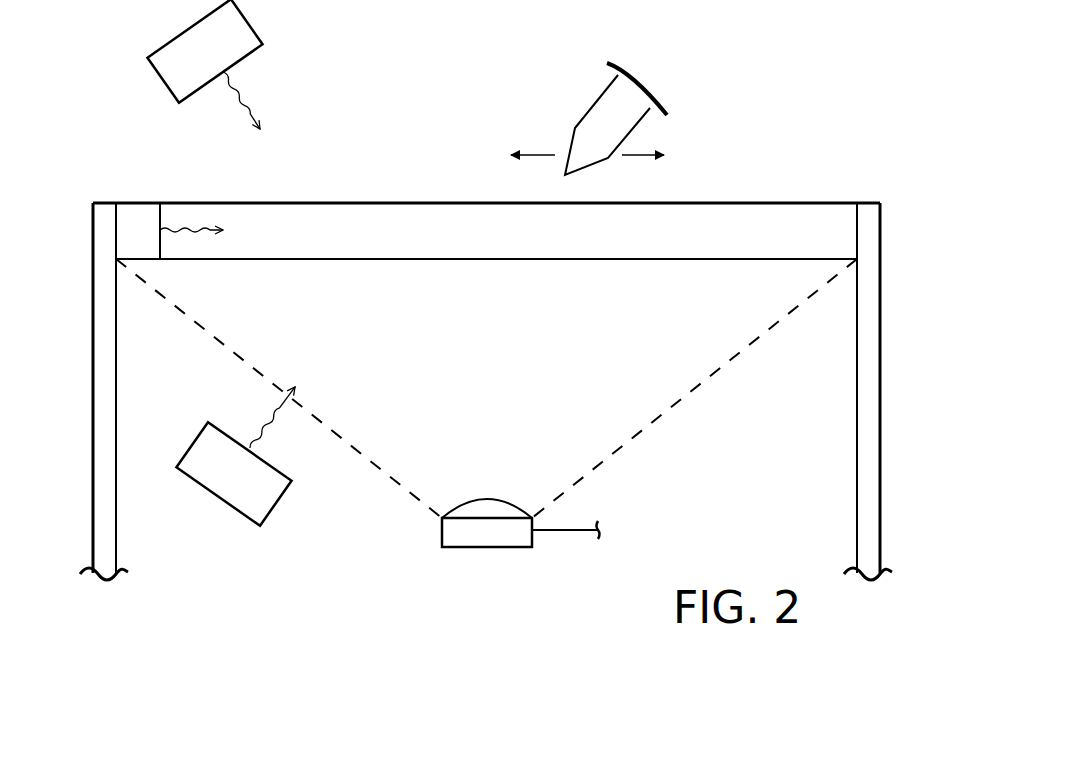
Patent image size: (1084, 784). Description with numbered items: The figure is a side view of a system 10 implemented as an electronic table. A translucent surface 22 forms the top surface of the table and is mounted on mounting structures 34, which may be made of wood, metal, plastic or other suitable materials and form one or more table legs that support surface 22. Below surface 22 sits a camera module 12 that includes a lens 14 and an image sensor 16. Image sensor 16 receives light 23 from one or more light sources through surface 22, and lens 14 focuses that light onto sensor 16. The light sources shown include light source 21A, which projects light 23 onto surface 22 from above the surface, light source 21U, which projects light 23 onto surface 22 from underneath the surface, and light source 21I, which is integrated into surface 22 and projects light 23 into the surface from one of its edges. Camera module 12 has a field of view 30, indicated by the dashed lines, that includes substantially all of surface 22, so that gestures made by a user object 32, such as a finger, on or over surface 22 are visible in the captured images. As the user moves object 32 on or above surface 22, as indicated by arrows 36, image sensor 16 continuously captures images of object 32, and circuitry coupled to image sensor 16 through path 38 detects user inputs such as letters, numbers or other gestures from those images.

The system 10 is at (787, 78).
The camera module 12 is at (439, 532).
The lens 14 is at (488, 507).
The image sensor 16 is at (487, 538).
The light source 21A is at (245, 23).
The light source 21I is at (138, 212).
The light source 21U is at (220, 497).
The translucent surface 22 is at (750, 210).
The light 23 is at (243, 102).
The field of view 30 is at (500, 375).
The user object 32 is at (602, 113).
The mounting structures 34 is at (105, 440).
The arrows 36 is at (538, 157).
The path 38 is at (565, 530).